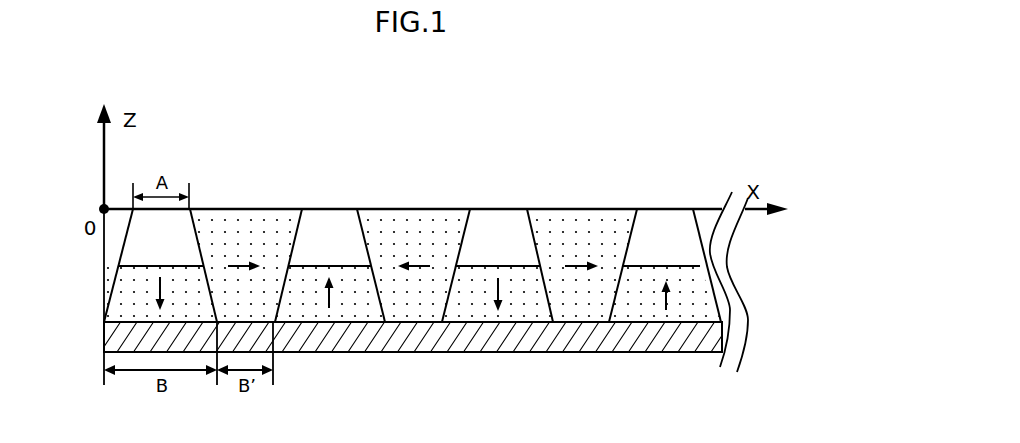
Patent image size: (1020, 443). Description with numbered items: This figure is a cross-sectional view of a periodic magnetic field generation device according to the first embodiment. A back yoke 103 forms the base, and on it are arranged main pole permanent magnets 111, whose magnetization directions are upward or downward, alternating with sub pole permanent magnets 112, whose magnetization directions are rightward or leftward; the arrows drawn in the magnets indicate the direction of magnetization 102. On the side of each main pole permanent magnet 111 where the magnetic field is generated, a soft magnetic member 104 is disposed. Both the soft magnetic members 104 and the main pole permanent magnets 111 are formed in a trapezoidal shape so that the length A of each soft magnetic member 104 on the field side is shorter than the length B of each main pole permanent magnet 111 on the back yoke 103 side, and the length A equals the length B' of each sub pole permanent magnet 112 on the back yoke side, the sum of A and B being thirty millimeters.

The direction of magnetization 102 is at (330, 303).
The back yoke 103 is at (630, 335).
The soft magnetic member 104 is at (177, 233).
The main pole permanent magnet 111 is at (175, 285).
The sub pole permanent magnet 112 is at (415, 240).